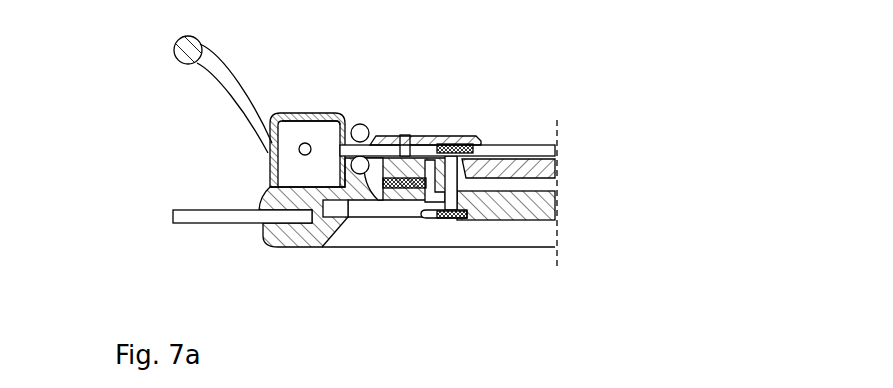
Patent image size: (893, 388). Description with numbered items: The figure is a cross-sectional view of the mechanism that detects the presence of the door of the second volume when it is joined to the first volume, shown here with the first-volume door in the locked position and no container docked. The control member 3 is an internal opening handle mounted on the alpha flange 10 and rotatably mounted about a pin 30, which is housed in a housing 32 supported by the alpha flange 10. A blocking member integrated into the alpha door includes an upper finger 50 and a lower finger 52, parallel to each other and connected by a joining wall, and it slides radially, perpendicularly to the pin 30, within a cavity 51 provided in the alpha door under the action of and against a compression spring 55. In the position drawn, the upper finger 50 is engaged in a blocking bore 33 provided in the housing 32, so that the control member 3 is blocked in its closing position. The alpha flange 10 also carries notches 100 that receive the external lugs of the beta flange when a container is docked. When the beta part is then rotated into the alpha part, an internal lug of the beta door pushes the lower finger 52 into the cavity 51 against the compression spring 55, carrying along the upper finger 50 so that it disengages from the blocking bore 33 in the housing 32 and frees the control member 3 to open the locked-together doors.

The control member 3 is at (138, 63).
The housing 32 is at (303, 90).
The blocking bore 33 is at (339, 116).
The pin 30 is at (281, 152).
The upper finger 50 is at (424, 122).
The compression spring 55 is at (481, 124).
The alpha flange 10 is at (291, 266).
The notches 100 is at (341, 214).
The lower finger 52 is at (430, 219).
The cavity 51 is at (455, 219).